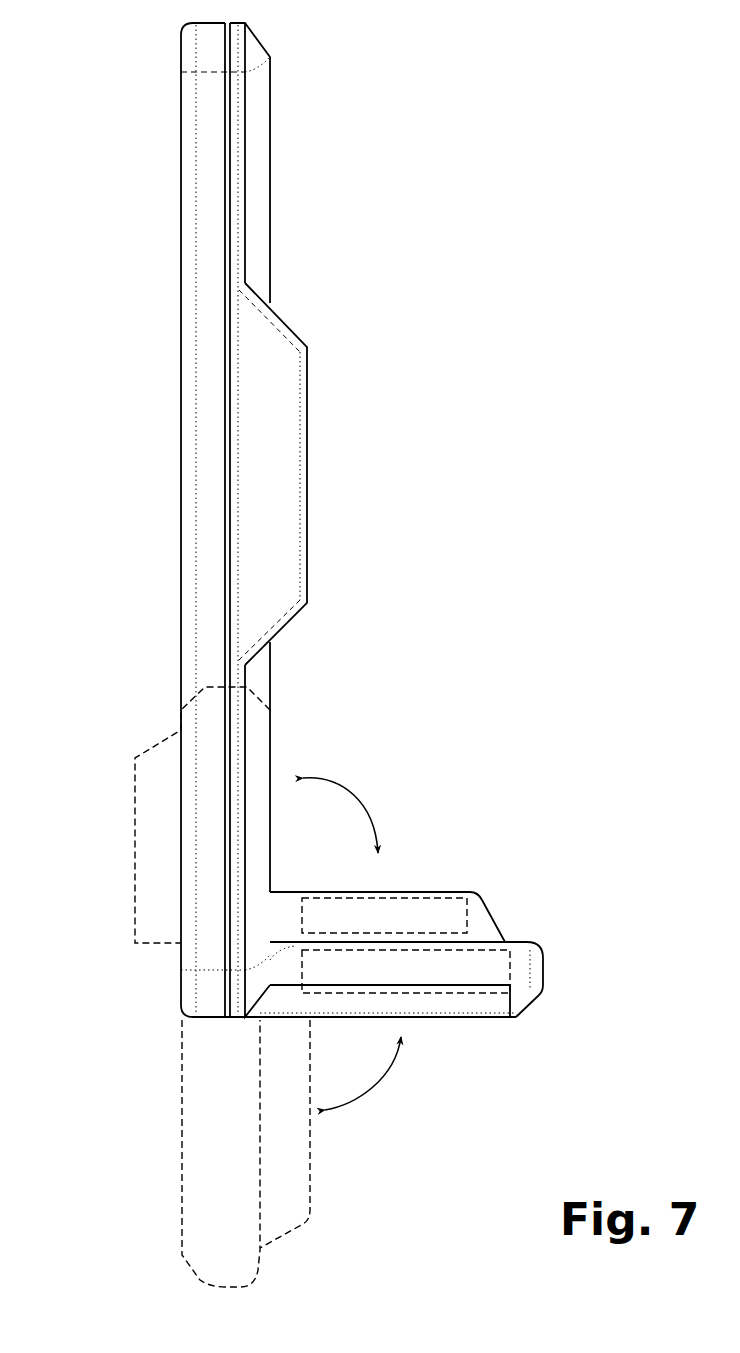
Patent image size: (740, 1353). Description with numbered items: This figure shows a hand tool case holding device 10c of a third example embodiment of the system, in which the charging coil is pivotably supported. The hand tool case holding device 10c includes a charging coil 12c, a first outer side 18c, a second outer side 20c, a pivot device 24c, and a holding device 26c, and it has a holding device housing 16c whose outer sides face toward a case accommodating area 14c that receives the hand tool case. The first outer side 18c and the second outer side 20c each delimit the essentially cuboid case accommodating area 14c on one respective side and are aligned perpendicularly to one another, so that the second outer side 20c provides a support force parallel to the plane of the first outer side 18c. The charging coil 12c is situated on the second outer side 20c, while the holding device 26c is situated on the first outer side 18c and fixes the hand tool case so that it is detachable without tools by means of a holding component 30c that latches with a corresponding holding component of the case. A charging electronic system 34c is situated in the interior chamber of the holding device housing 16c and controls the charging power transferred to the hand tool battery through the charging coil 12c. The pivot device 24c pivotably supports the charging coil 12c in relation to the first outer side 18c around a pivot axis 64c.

The hand tool case holding device 10c is at (164, 57).
The charging coil 12c is at (436, 912).
The case accommodating area 14c is at (398, 104).
The holding device housing 16c is at (213, 213).
The first outer side 18c is at (273, 682).
The second outer side 20c is at (392, 890).
The pivot device 24c is at (162, 989).
The holding device 26c is at (329, 469).
The holding component 30c is at (287, 418).
The charging electronic system 34c is at (360, 958).
The pivot axis 64c is at (225, 975).